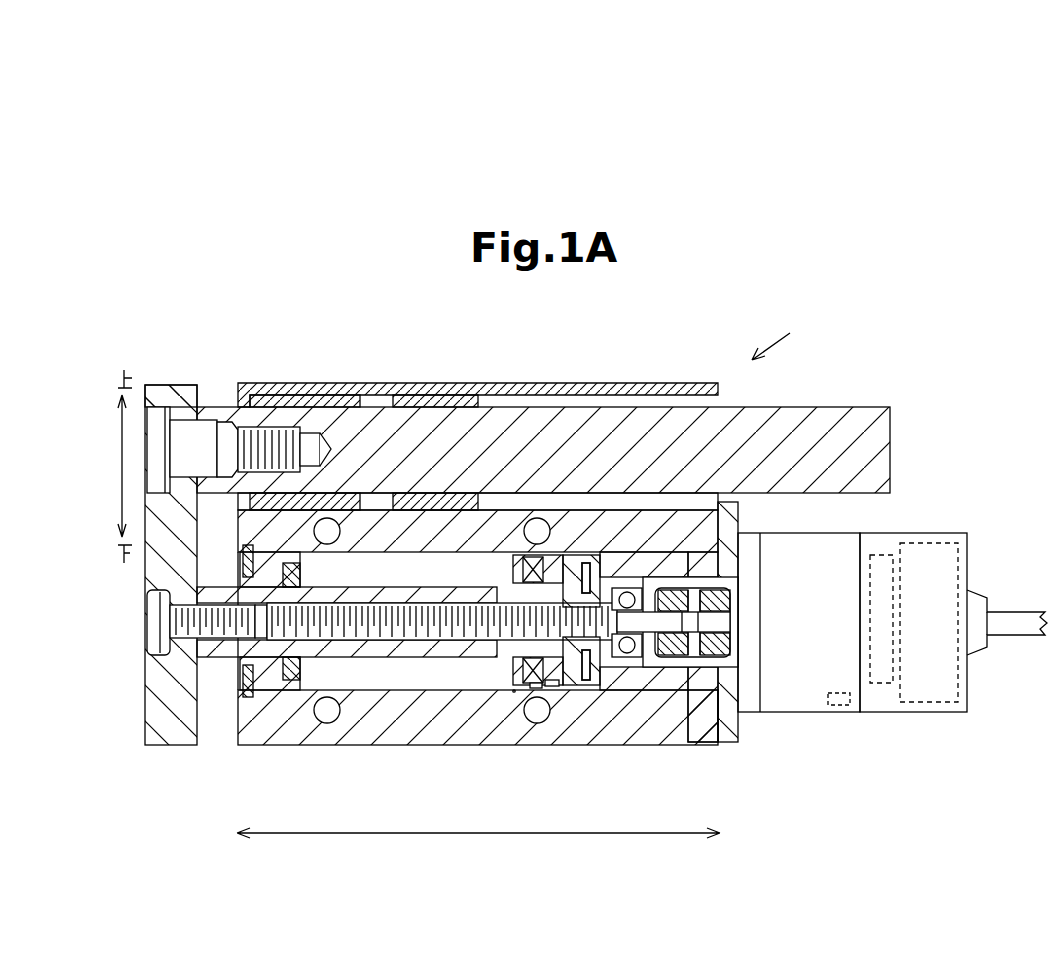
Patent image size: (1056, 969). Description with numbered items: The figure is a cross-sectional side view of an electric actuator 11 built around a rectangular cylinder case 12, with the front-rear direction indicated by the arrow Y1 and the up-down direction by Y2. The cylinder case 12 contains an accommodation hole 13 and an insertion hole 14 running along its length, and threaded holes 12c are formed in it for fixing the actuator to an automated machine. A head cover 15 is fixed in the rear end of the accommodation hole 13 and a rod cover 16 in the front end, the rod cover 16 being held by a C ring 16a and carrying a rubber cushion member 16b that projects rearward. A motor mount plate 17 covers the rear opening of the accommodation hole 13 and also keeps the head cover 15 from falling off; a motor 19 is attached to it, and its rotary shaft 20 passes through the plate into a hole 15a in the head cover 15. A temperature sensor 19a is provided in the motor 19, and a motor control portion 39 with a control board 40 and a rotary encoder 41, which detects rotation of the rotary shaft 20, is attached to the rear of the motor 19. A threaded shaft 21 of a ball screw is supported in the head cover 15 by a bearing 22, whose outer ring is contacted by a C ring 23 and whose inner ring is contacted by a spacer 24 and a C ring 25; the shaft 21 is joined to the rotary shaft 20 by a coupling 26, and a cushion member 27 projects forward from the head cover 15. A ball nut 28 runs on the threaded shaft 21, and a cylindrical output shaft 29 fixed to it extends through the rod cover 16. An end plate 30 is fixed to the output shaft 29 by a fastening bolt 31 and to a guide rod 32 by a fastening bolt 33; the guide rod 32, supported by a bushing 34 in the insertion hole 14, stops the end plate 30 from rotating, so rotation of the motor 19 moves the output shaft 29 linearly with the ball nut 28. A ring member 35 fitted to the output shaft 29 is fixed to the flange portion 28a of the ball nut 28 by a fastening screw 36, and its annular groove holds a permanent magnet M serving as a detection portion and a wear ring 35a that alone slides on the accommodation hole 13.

The electric actuator 11 is at (787, 337).
The cylinder case 12 is at (651, 763).
The threaded holes 12c is at (330, 519).
The accommodation hole 13 is at (377, 692).
The insertion hole 14 is at (568, 405).
The head cover 15 is at (675, 562).
The hole 15a is at (697, 670).
The rod cover 16 is at (256, 560).
The C ring 16a is at (252, 548).
The cushion member 16b is at (305, 670).
The motor mount plate 17 is at (740, 512).
The motor 19 is at (798, 534).
The temperature sensor 19a is at (832, 712).
The rotary shaft 20 is at (735, 622).
The threaded shaft 21 is at (405, 643).
The bearing 22 is at (657, 668).
The C ring 23 is at (613, 660).
The spacer 24 is at (630, 594).
The C ring 25 is at (651, 596).
The coupling 26 is at (733, 588).
The cushion member 27 is at (587, 564).
The ball nut 28 is at (515, 590).
The flange portion 28a is at (553, 688).
The output shaft 29 is at (208, 652).
The end plate 30 is at (162, 392).
The fastening bolt 31 is at (152, 618).
The guide rod 32 is at (263, 415).
The fastening bolt 33 is at (181, 434).
The bushing 34 is at (307, 398).
The ring member 35 is at (518, 672).
The wear ring 35a is at (541, 690).
The fastening screw 36 is at (587, 685).
The motor control portion 39 is at (888, 714).
The control board 40 is at (960, 560).
The rotary encoder 41 is at (882, 553).
The permanent magnet M is at (513, 692).
The front-back direction Y1 is at (457, 840).
The up-down direction Y2 is at (118, 437).